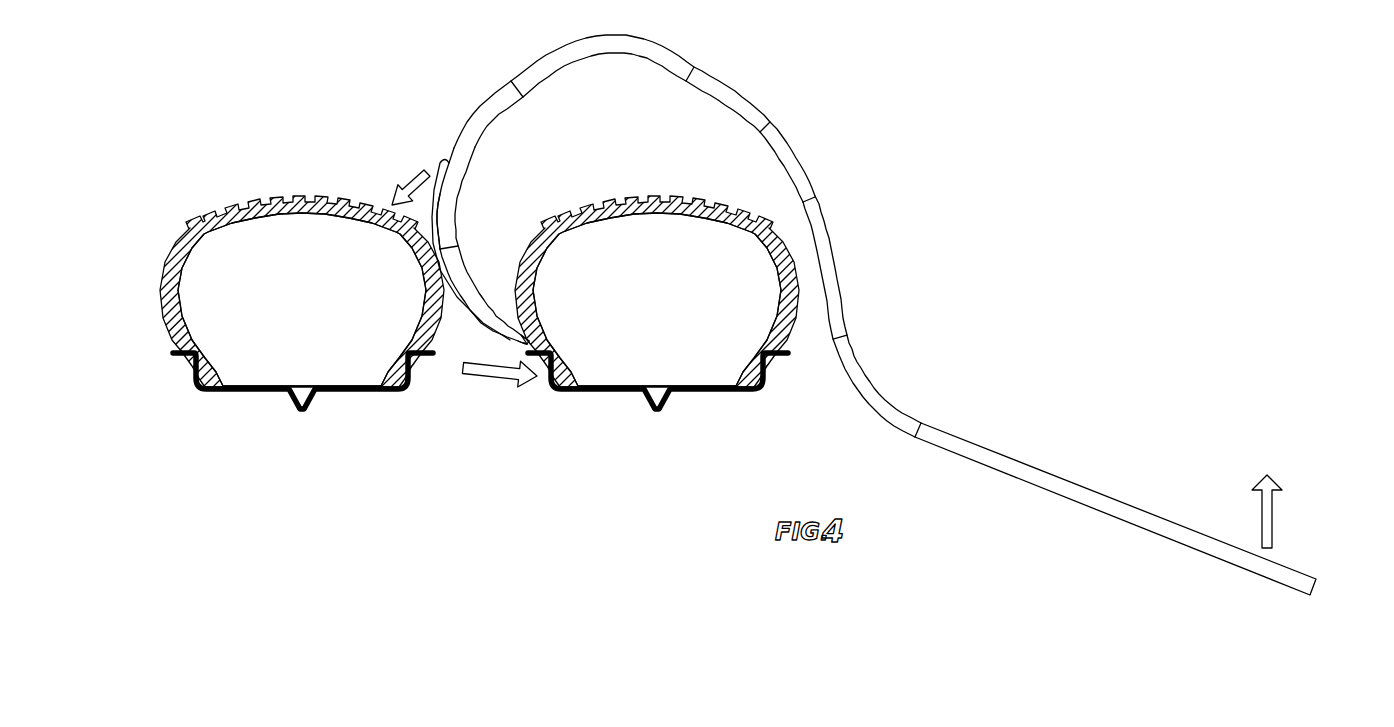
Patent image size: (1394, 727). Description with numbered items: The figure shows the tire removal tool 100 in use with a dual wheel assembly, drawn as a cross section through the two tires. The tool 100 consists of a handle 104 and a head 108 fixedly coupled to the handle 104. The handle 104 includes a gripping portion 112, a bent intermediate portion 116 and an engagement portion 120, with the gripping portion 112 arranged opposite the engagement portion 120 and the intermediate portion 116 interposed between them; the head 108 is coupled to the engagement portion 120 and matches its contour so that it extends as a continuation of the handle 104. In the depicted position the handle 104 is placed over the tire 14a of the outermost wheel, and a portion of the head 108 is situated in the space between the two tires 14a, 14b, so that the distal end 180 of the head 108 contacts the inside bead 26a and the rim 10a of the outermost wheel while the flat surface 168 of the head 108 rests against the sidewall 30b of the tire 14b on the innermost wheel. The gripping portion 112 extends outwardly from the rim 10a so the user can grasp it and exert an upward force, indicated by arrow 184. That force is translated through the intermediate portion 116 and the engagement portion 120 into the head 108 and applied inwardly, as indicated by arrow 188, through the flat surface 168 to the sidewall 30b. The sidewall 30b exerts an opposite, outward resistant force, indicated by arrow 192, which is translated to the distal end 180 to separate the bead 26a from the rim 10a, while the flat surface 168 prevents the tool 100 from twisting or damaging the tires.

The rim 10a is at (541, 360).
The tire 14a is at (640, 193).
The tire 14b is at (313, 190).
The inside bead 26a is at (546, 332).
The sidewall 30b is at (421, 277).
The tool 100 is at (874, 315).
The handle 104 is at (839, 318).
The head 108 is at (443, 243).
The gripping portion 112 is at (1130, 515).
The intermediate portion 116 is at (722, 97).
The engagement portion 120 is at (455, 190).
The flat surface 168 is at (452, 297).
The distal end 180 is at (515, 337).
The arrow 184 is at (1273, 523).
The arrow 188 is at (408, 177).
The arrow 192 is at (495, 388).